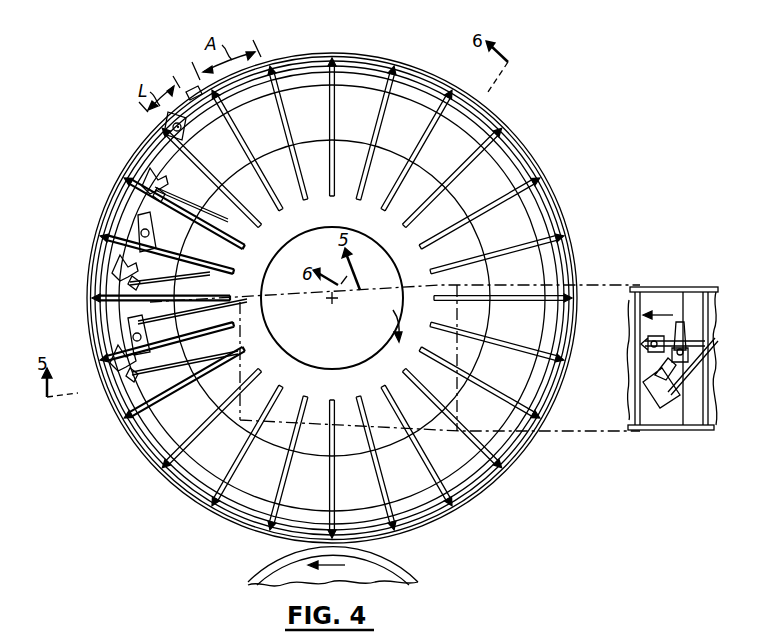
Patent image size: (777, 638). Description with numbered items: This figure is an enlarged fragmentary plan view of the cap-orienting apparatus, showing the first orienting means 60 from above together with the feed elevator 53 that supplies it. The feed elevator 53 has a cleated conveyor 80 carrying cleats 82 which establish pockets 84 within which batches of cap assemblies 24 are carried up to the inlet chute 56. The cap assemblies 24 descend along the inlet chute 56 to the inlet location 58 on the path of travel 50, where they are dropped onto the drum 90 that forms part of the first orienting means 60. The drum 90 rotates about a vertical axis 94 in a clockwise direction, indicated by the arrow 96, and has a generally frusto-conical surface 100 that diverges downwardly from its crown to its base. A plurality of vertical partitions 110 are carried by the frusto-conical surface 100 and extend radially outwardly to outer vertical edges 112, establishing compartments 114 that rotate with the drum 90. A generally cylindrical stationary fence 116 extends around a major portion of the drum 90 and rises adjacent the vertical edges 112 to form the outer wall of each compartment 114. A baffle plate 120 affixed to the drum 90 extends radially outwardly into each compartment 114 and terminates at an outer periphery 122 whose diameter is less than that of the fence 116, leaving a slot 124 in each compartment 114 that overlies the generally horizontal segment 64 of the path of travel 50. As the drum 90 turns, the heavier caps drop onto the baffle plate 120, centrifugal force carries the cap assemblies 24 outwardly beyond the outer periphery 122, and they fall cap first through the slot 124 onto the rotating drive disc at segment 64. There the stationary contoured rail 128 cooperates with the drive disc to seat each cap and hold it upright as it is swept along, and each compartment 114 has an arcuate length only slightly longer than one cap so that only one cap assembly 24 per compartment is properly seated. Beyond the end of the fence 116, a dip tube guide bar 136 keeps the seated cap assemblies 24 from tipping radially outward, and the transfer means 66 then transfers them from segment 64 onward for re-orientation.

The cap assembly 24 is at (640, 402).
The path of travel 50 is at (97, 307).
The feed elevator 53 is at (646, 290).
The inlet chute 56 is at (380, 296).
The inlet location 58 is at (250, 345).
The first orienting means 60 is at (293, 46).
The generally horizontal segment 64 is at (510, 455).
The transfer means 66 is at (412, 576).
The cleated conveyor 80 is at (666, 416).
The cleat 82 is at (700, 388).
The pocket 84 is at (670, 303).
The drum 90 is at (486, 164).
The vertical axis 94 is at (333, 302).
The arrow 96 is at (395, 322).
The frusto-conical surface 100 is at (480, 202).
The vertical partition 110 is at (377, 112).
The outer vertical edge 112 is at (418, 115).
The compartment 114 is at (513, 227).
The stationary fence 116 is at (195, 92).
The baffle plate 120 is at (535, 277).
The outer periphery 122 is at (122, 425).
The slot 124 is at (122, 407).
The stationary contoured rail 128 is at (430, 510).
The dip tube guide bar 136 is at (490, 478).